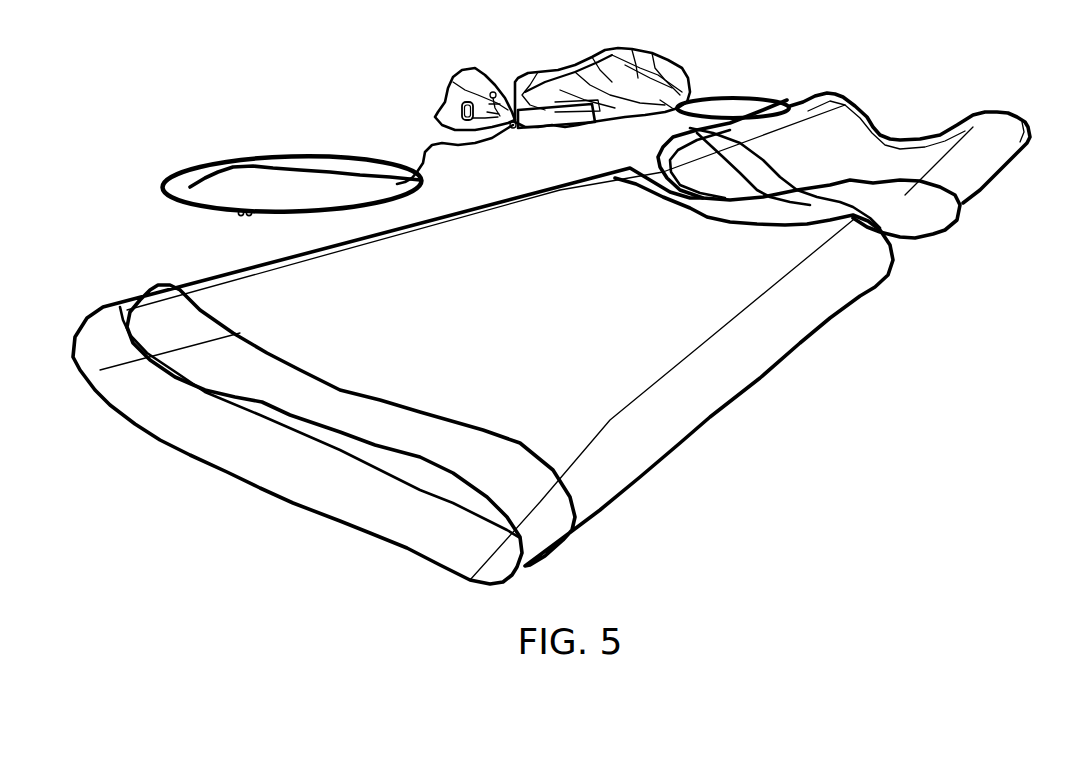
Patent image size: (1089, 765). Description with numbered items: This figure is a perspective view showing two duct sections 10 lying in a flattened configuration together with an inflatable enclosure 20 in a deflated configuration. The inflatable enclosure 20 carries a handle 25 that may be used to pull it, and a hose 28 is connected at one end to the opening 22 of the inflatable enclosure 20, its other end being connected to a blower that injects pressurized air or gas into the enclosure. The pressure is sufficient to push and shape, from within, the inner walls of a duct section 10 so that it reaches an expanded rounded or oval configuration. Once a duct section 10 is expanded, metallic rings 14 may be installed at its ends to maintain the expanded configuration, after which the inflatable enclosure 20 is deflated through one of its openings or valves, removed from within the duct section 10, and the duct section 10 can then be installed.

The duct section 10 is at (980, 157).
The metallic rings 14 is at (303, 152).
The inflatable enclosure 20 is at (470, 68).
The opening 22 is at (535, 75).
The handle 25 is at (441, 107).
The hose 28 is at (422, 157).